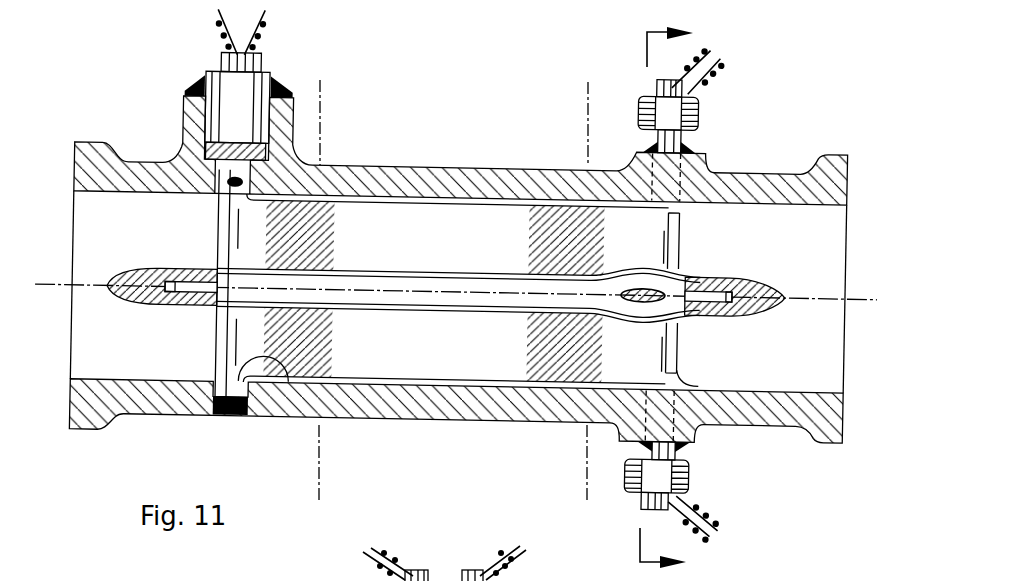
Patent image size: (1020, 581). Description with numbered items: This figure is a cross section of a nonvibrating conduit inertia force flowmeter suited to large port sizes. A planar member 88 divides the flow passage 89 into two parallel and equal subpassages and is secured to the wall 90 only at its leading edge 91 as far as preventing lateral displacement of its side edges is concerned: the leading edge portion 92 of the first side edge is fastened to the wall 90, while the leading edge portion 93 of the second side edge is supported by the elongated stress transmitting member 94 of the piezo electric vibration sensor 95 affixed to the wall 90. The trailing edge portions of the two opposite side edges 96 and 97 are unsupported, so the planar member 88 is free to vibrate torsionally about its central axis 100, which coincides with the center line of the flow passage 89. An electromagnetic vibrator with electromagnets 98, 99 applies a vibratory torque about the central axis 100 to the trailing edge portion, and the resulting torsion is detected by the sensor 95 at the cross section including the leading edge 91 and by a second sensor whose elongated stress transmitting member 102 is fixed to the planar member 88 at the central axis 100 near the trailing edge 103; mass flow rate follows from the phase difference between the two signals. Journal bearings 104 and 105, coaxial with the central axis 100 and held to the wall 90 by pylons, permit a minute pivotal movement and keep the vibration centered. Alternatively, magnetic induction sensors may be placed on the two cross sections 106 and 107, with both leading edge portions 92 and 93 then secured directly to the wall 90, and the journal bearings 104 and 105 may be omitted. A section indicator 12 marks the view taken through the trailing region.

The section line for FIG. 12 is at (683, 301).
The planar member 88 is at (462, 365).
The flow passage 89 is at (138, 236).
The wall 90 is at (130, 193).
The leading edge 91 is at (215, 340).
The leading edge portion of the first side edge 92 is at (287, 368).
The leading edge portion of the second side edge 93 is at (243, 198).
The elongated stress transmitting member 94 is at (173, 158).
The piezo electric vibration sensor 95 is at (262, 63).
The trailing edge portion of first side edge 96 is at (682, 213).
The trailing edge portion of second side edge 97 is at (677, 372).
The electromagnet 98 is at (697, 116).
The electromagnet 99 is at (692, 485).
The central axis 100 is at (857, 300).
The elongated stress transmitting member 102 is at (643, 290).
The trailing edge 103 is at (680, 343).
The journal bearing 104 is at (140, 303).
The journal bearing 105 is at (770, 312).
The cross section 106 is at (345, 497).
The cross section 107 is at (587, 500).